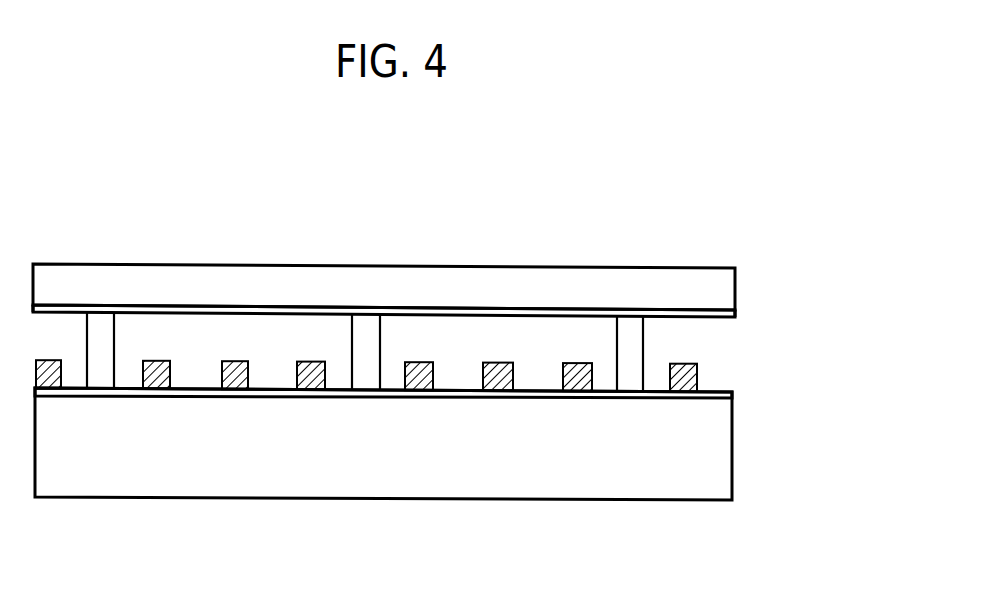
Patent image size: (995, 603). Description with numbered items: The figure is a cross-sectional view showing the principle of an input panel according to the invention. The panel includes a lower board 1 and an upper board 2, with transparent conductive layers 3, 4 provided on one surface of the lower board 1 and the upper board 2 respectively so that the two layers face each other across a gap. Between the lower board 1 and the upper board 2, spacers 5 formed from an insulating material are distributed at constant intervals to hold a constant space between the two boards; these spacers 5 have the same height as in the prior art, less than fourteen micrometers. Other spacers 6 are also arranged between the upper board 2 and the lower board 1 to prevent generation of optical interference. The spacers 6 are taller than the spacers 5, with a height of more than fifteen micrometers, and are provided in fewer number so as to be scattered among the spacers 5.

The lower board 1 is at (295, 481).
The upper board 2 is at (96, 266).
The transparent conductive layer 3 is at (717, 390).
The transparent conductive layer 4 is at (720, 318).
The spacer 5 is at (240, 358).
The spacer 6 is at (368, 353).